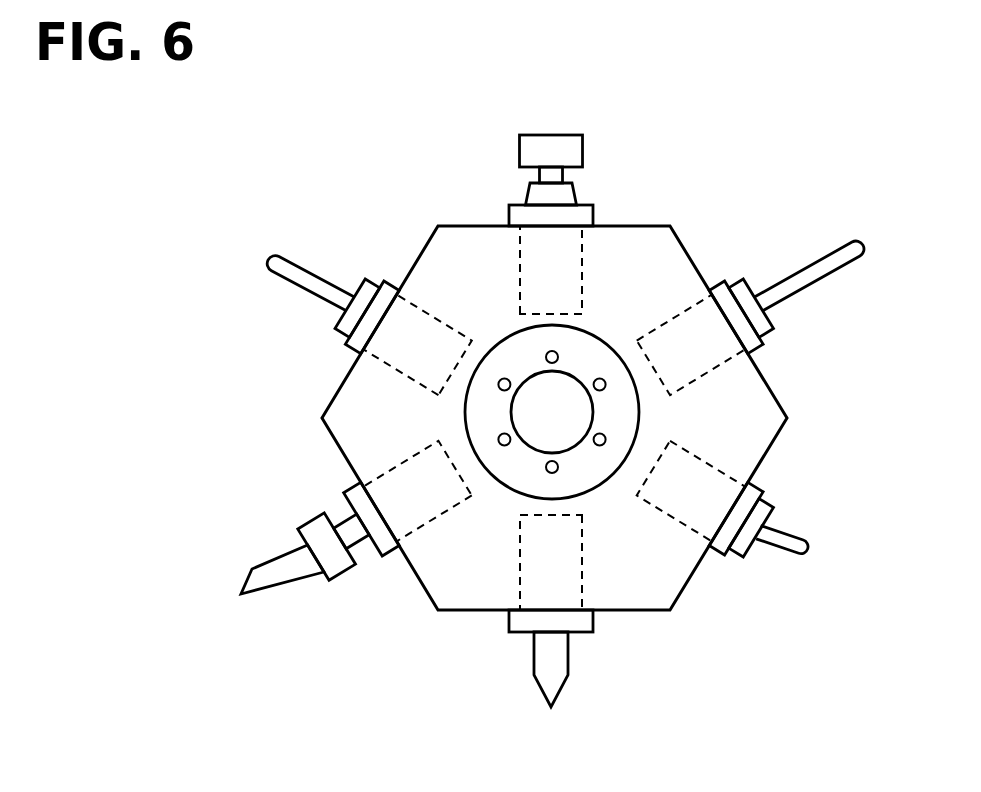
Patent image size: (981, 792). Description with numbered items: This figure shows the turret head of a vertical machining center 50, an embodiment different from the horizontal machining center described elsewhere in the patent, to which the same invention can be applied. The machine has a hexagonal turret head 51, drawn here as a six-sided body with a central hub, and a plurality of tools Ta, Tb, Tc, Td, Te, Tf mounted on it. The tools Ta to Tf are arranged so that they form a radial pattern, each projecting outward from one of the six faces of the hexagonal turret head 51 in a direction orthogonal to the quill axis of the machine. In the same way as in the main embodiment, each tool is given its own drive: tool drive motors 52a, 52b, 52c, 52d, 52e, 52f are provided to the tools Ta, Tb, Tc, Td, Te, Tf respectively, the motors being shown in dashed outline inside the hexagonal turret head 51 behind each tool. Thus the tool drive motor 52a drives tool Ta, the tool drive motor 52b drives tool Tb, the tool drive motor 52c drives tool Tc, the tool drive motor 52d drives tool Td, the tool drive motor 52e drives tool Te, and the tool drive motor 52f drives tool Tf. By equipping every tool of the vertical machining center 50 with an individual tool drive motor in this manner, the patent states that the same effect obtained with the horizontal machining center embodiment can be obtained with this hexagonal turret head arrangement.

The vertical machining center 50 is at (542, 402).
The hexagonal turret head 51 is at (440, 214).
The tool drive motor 52a is at (520, 262).
The tool drive motor 52b is at (397, 363).
The tool drive motor 52c is at (395, 467).
The tool drive motor 52d is at (580, 560).
The tool drive motor 52e is at (690, 447).
The tool drive motor 52f is at (697, 378).
The tool Ta is at (583, 151).
The tool Tb is at (292, 287).
The tool Tc is at (268, 585).
The tool Td is at (567, 662).
The tool Te is at (808, 550).
The tool Tf is at (814, 242).